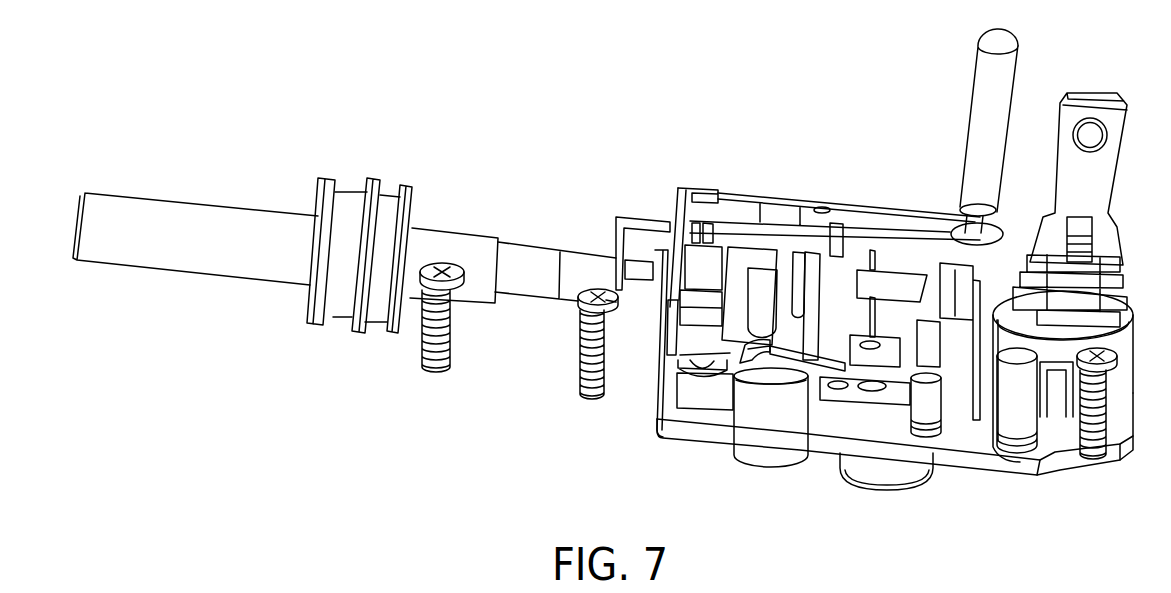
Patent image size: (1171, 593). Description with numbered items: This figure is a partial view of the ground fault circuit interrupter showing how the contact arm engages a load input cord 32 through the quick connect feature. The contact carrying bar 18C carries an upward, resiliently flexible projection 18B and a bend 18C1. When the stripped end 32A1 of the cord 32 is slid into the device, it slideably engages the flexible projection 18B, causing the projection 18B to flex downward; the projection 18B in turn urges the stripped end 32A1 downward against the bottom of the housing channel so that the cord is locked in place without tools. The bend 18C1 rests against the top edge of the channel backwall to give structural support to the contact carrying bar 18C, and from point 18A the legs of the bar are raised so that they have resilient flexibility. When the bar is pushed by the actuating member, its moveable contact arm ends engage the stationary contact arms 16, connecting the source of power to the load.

The load input cord 32 is at (223, 273).
The stripped end 32A1 is at (700, 313).
The flexible projection 18B is at (683, 320).
The point 18A is at (697, 367).
The bend 18C1 is at (768, 343).
The contact carrying bar 18C is at (813, 367).
The stationary contact arms 16 is at (985, 405).